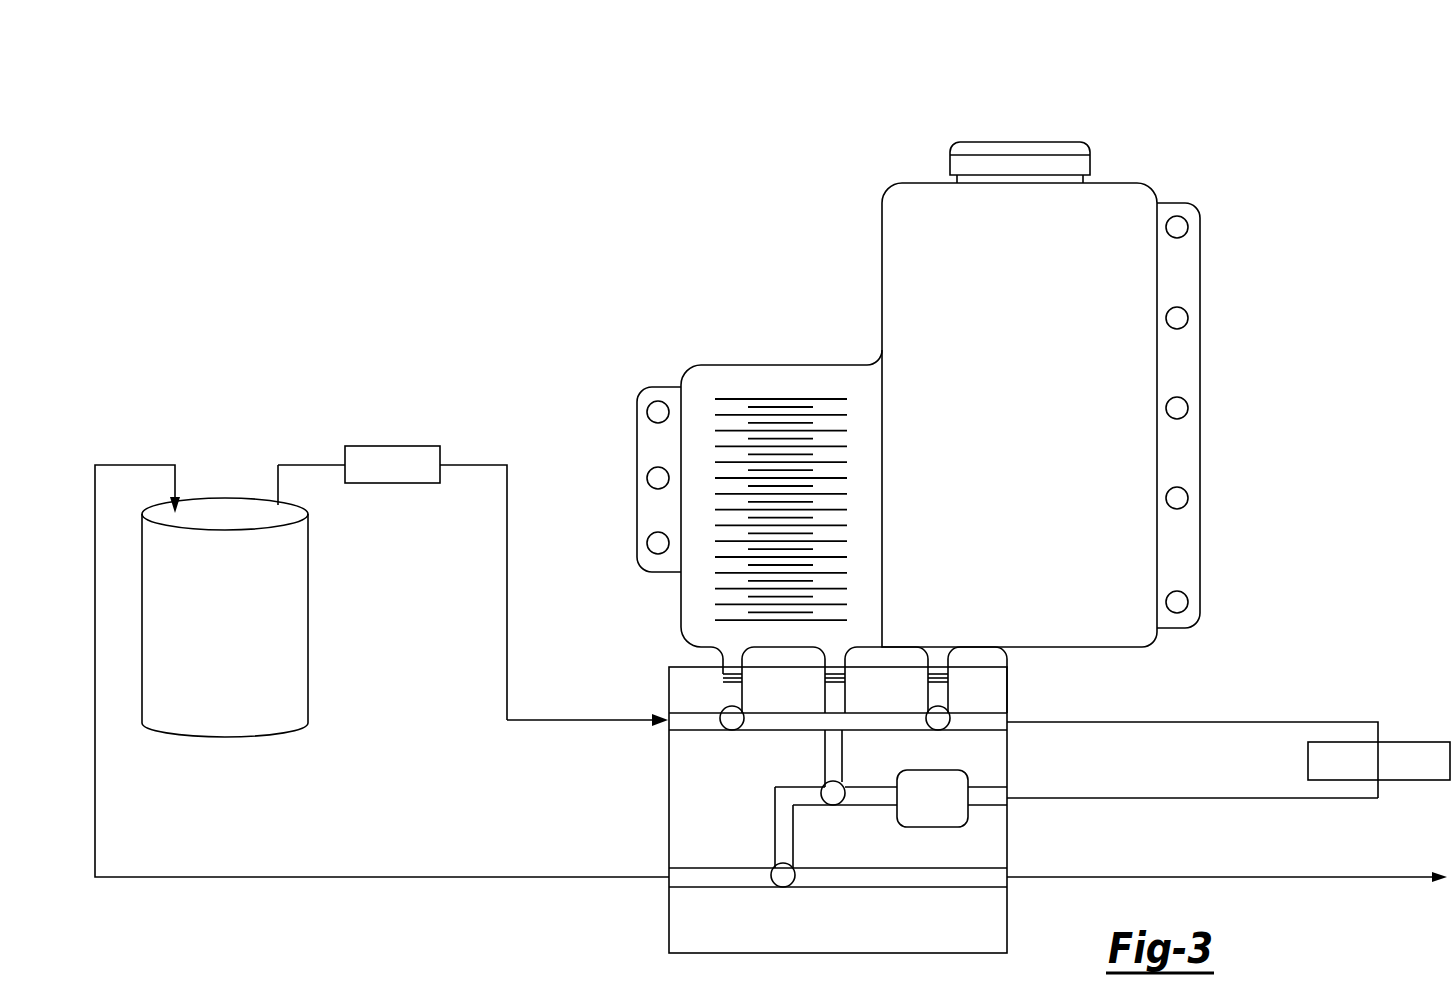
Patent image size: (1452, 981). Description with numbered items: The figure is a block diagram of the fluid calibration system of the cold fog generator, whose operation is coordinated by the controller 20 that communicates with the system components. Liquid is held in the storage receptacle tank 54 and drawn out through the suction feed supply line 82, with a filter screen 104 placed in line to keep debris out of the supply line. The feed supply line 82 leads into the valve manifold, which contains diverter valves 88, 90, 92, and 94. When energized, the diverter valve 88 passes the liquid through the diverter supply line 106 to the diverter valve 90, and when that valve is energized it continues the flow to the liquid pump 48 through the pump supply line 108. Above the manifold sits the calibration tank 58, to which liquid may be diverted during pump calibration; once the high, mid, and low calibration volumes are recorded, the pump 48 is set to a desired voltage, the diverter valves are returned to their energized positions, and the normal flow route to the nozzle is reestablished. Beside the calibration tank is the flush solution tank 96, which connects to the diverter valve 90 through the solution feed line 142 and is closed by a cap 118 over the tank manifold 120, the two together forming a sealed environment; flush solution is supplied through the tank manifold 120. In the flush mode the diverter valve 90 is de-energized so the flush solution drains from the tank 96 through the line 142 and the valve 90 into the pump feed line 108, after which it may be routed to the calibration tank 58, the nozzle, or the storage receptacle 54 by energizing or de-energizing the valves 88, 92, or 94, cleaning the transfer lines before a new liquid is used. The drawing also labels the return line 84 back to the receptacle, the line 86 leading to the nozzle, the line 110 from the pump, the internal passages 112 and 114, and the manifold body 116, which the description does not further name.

The controller 20 is at (576, 718).
The liquid pump 48 is at (1416, 742).
The storage receptacle tank 54 is at (308, 618).
The calibration tank 58 is at (792, 352).
The suction feed supply line 82 is at (507, 588).
The return line 84 is at (577, 876).
The nozzle supply line 86 is at (1230, 877).
The diverter valve 88 is at (748, 723).
The diverter valve 90 is at (954, 723).
The diverter valve 92 is at (847, 800).
The diverter valve 94 is at (796, 884).
The flush solution tank 96 is at (1143, 177).
The filter screen 104 is at (389, 446).
The diverter supply line 106 is at (760, 712).
The pump supply line 108 is at (1232, 721).
The pump return line 110 is at (1230, 797).
The passage 112 is at (775, 830).
The passage 114 is at (846, 680).
The manifold 116 is at (723, 680).
The cap 118 is at (1057, 114).
The tank manifold 120 is at (957, 177).
The solution feed line 142 is at (948, 680).